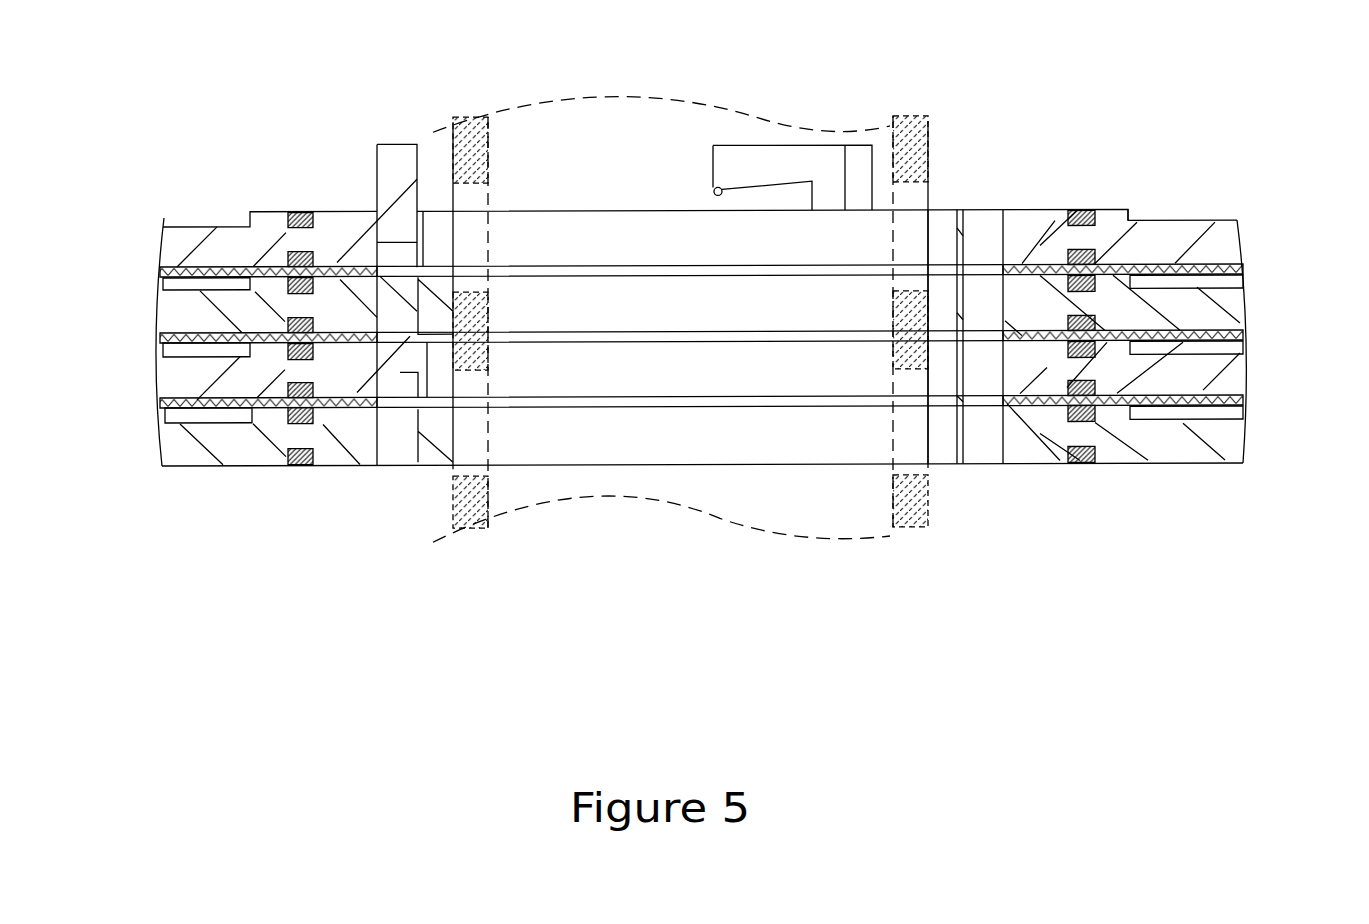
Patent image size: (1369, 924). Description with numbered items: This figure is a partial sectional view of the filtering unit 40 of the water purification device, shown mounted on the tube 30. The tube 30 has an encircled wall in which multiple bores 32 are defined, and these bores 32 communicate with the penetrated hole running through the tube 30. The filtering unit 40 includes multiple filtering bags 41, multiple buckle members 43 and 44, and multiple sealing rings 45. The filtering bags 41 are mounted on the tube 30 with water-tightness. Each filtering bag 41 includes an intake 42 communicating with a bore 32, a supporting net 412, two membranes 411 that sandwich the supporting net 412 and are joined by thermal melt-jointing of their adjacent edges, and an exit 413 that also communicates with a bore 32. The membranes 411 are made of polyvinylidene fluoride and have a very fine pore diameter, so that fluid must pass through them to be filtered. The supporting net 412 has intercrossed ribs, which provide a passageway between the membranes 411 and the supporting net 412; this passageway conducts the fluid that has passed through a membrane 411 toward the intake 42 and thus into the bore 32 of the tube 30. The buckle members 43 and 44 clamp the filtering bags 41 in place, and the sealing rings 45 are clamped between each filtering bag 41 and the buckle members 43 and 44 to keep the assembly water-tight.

The tube 30 is at (566, 506).
The bores 32 is at (910, 240).
The filtering unit 40 is at (219, 252).
The filtering bags 41 is at (1174, 319).
The membranes 411 is at (1215, 352).
The supporting net 412 is at (1167, 295).
The exit 413 is at (1005, 273).
The intake 42 is at (575, 267).
The buckle member 43 is at (186, 310).
The buckle member 44 is at (186, 243).
The sealing rings 45 is at (297, 268).